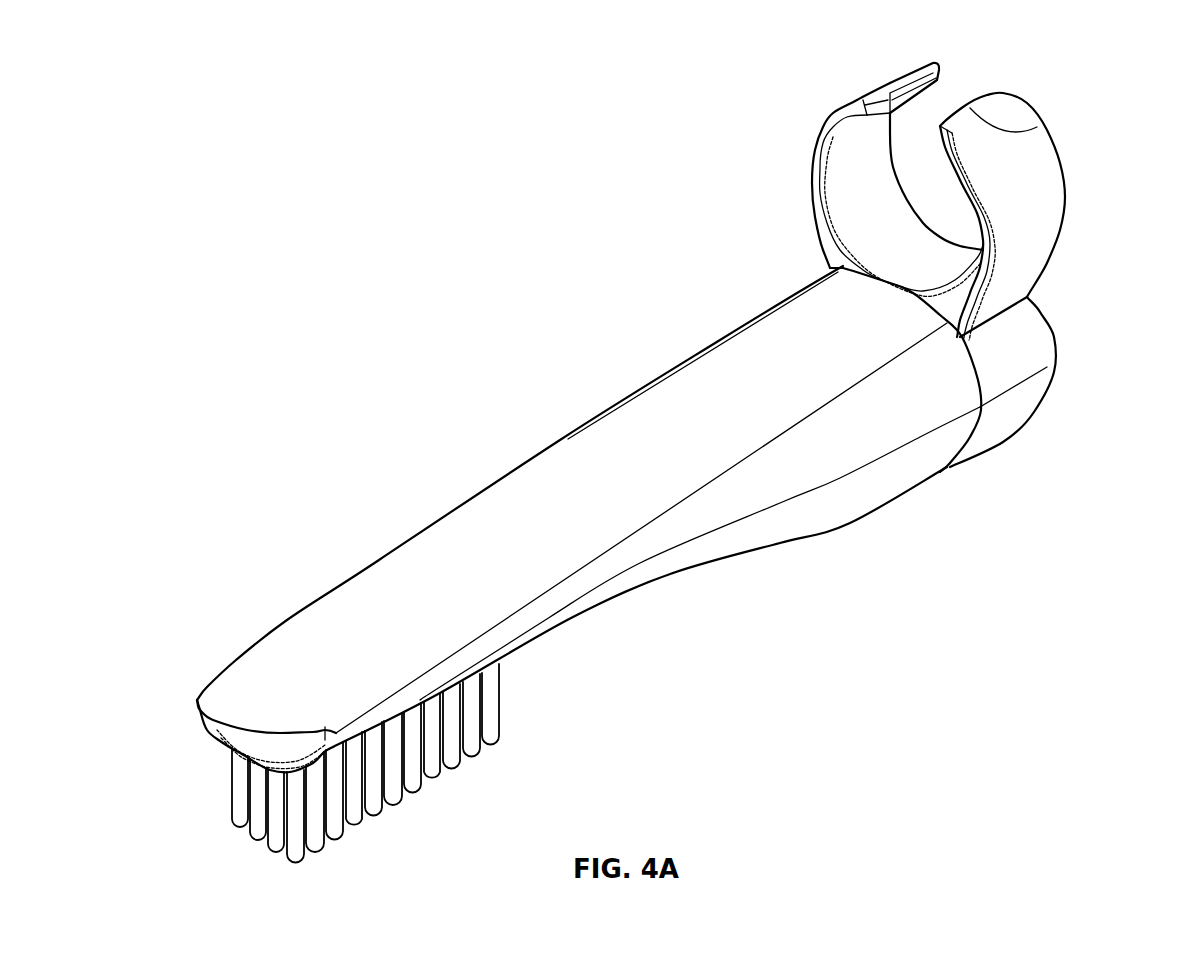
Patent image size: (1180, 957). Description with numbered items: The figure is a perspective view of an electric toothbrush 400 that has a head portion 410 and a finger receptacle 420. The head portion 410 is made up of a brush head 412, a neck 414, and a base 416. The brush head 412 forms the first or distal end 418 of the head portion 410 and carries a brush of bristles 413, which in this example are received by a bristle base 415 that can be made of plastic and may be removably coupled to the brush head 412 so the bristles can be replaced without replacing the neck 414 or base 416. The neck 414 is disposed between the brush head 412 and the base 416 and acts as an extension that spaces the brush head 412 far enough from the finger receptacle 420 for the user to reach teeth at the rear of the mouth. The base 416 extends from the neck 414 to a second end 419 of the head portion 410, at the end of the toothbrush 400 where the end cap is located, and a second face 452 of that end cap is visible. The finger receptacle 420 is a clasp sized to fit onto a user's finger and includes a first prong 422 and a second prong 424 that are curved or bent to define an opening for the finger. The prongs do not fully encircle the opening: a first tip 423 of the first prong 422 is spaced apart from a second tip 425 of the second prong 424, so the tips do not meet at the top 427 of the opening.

The electric toothbrush 400 is at (352, 178).
The head portion 410 is at (489, 482).
The brush head 412 is at (337, 673).
The brush of bristles 413 is at (378, 812).
The neck 414 is at (552, 617).
The bristle base 415 is at (282, 770).
The base 416 is at (847, 522).
The distal end 418 is at (227, 730).
The second end 419 is at (943, 473).
The finger receptacle 420 is at (810, 150).
The first prong 422 is at (825, 127).
The first tip 423 is at (920, 70).
The second prong 424 is at (1069, 195).
The second tip 425 is at (1037, 127).
The top of the opening 427 is at (963, 68).
The second face 452 is at (1047, 312).